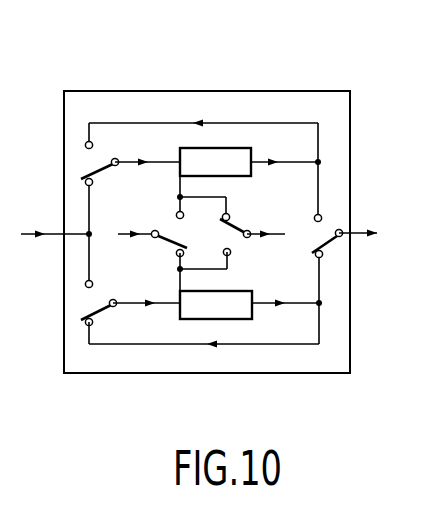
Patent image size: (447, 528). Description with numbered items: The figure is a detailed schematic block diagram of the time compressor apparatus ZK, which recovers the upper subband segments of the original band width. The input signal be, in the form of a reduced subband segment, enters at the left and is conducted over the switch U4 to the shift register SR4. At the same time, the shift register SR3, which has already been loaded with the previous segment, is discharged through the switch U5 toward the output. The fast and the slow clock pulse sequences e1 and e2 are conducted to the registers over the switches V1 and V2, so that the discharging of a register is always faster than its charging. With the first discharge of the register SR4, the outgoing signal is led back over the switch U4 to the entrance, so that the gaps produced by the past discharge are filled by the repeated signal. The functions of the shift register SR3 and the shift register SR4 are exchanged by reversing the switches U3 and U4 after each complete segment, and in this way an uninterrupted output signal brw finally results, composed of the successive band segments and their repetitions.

The time compressor apparatus ZK is at (193, 105).
The input signal be is at (57, 243).
The outgoing uninterrupted signal brw is at (358, 217).
The switch U4 is at (199, 177).
The switch U3 is at (200, 323).
The switch U5 is at (329, 261).
The switch V1 is at (152, 246).
The switch V2 is at (252, 220).
The clock pulse sequence e1 is at (139, 255).
The clock pulse sequence e2 is at (234, 257).
The shift register SR4 is at (248, 185).
The shift register SR3 is at (251, 287).